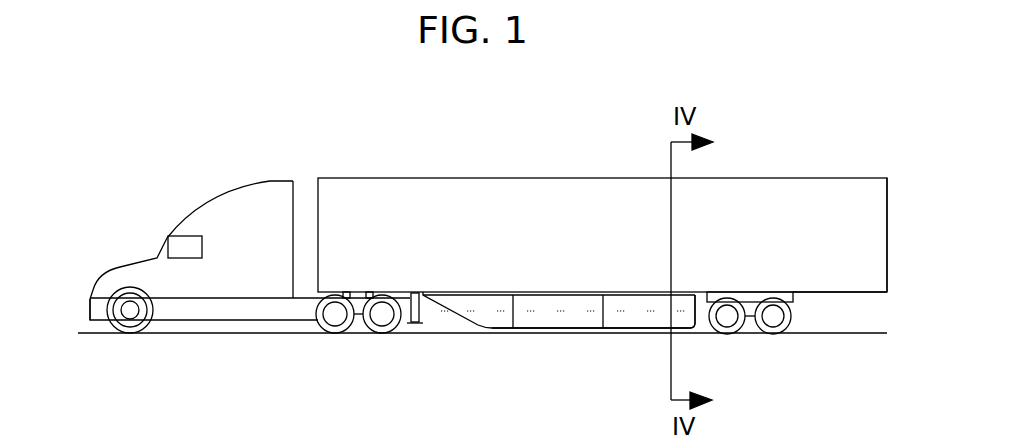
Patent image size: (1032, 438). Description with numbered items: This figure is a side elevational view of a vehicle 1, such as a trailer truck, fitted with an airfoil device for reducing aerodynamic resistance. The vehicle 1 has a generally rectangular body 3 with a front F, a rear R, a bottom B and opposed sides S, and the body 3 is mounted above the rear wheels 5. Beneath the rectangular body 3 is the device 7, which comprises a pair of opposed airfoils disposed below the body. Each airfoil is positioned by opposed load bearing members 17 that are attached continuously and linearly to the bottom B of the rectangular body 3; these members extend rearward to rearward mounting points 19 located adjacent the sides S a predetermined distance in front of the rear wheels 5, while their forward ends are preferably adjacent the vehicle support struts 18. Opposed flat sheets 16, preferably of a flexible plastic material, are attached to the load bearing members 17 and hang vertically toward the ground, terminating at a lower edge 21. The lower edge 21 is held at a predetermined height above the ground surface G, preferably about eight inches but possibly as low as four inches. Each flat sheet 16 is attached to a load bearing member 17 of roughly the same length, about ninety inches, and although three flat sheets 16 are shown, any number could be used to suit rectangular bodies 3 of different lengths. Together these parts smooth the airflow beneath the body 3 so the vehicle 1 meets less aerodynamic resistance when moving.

The vehicle 1 is at (488, 254).
The rectangular body 3 is at (370, 203).
The rear wheels 5 is at (727, 334).
The device 7 is at (598, 296).
The opposed flat sheets 16 is at (633, 328).
The opposed load bearing members 17 is at (650, 291).
The vehicle support struts 18 is at (413, 292).
The rearward mounting points 19 is at (695, 292).
The lower edge 21 is at (683, 331).
The sides S is at (523, 212).
The rear R is at (885, 212).
The front F is at (90, 320).
The ground surface G is at (192, 334).
The bottom B is at (818, 292).